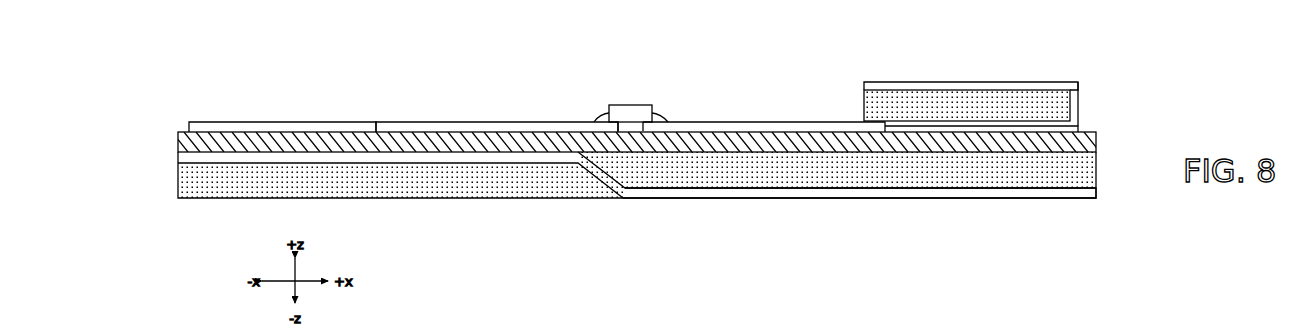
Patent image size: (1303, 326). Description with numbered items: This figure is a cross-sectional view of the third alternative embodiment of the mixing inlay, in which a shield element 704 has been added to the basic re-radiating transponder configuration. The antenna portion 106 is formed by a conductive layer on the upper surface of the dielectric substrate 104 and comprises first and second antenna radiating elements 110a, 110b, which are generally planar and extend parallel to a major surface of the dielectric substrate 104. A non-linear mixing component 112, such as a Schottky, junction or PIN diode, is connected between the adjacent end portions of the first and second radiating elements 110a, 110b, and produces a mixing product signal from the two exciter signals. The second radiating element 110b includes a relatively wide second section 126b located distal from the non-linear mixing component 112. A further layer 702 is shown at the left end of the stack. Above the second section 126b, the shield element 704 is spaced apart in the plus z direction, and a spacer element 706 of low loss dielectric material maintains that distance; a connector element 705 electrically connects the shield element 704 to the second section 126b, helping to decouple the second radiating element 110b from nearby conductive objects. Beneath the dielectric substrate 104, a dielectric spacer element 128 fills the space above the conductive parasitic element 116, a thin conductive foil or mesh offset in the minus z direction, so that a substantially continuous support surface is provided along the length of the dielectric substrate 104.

The cover layer 702 is at (176, 109).
The first antenna radiating element 110a is at (396, 96).
The antenna portion 106 is at (630, 86).
The non-linear mixing component 112 is at (628, 104).
The second antenna radiating element 110b is at (809, 111).
The spacer element 706 is at (863, 102).
The shield element 704 is at (968, 81).
The connector element 705 is at (1079, 105).
The second section 126b is at (1058, 126).
The dielectric substrate 104 is at (1097, 140).
The dielectric spacer element 128 is at (799, 178).
The conductive parasitic element 116 is at (689, 193).